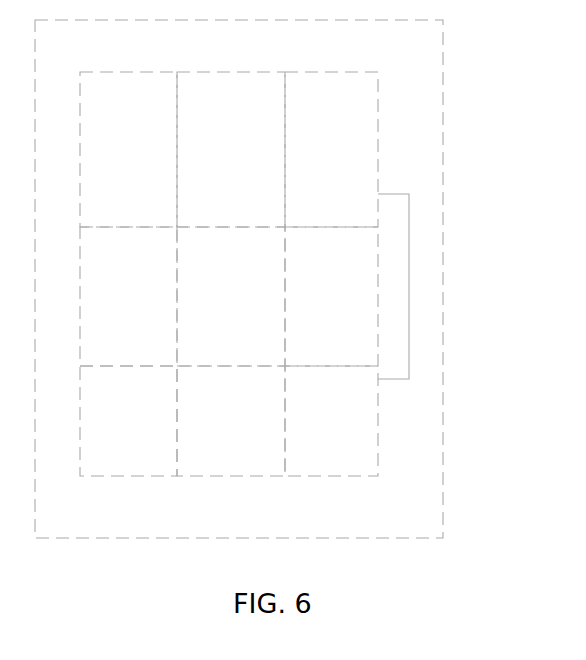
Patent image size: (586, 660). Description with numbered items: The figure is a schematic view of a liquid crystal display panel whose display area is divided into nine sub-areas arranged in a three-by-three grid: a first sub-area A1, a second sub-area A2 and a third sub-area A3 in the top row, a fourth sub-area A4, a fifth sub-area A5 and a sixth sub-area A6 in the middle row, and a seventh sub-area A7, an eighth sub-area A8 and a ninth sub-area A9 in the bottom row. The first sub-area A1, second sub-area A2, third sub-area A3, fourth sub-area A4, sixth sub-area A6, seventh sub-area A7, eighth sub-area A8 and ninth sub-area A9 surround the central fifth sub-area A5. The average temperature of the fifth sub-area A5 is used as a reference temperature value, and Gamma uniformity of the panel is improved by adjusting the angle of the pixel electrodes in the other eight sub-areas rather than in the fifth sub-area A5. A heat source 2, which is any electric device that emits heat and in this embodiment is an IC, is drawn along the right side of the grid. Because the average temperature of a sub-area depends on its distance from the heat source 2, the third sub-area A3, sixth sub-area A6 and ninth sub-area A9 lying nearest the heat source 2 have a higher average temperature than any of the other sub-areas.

The heat source 2 is at (295, 266).
The first sub-area A1 is at (128, 149).
The second sub-area A2 is at (231, 149).
The third sub-area A3 is at (331, 149).
The fourth sub-area A4 is at (128, 296).
The fifth sub-area A5 is at (231, 296).
The sixth sub-area A6 is at (331, 296).
The seventh sub-area A7 is at (128, 421).
The eighth sub-area A8 is at (231, 421).
The ninth sub-area A9 is at (331, 421).